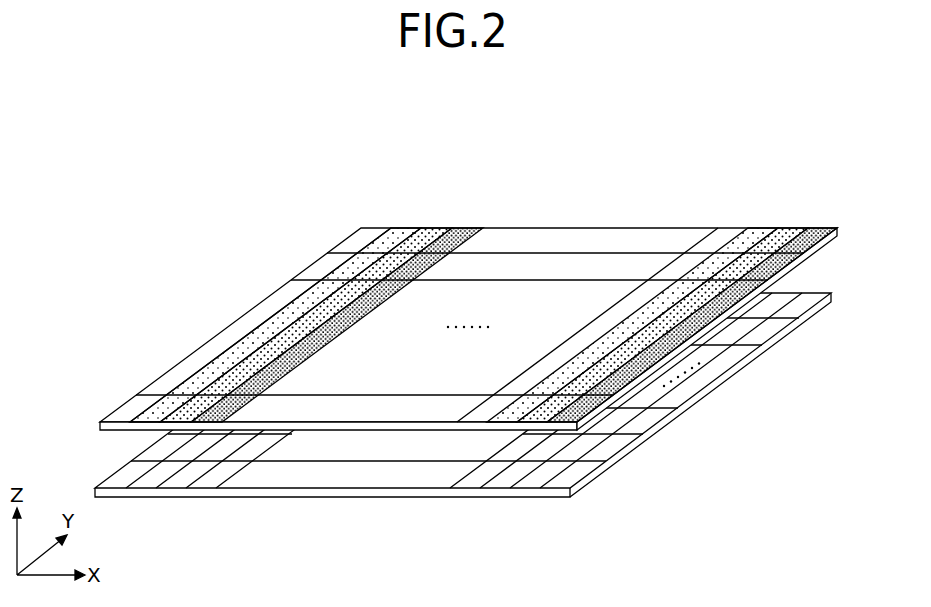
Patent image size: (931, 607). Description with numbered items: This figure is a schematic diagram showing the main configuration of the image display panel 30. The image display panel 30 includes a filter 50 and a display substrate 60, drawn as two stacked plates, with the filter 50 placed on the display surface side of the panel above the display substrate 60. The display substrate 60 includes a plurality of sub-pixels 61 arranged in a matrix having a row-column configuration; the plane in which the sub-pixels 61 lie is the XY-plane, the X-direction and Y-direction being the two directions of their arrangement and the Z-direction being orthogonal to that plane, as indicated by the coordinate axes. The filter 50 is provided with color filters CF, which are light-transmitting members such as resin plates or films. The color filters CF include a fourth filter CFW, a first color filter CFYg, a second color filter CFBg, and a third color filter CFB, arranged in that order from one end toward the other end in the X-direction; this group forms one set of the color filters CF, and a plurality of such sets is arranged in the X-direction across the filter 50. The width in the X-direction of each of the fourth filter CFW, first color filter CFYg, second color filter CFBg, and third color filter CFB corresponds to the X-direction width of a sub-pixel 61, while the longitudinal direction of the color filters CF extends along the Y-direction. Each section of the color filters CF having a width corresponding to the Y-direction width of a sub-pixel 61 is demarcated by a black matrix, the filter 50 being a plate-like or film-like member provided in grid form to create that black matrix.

The image display panel 30 is at (492, 315).
The filter 50 is at (468, 272).
The display substrate 60 is at (492, 433).
The sub-pixels 61 is at (570, 478).
The color filters CF is at (483, 268).
The fourth filter CFW is at (372, 228).
The first color filter CFYg is at (398, 228).
The second color filter CFBg is at (432, 228).
The third color filter CFB is at (312, 167).